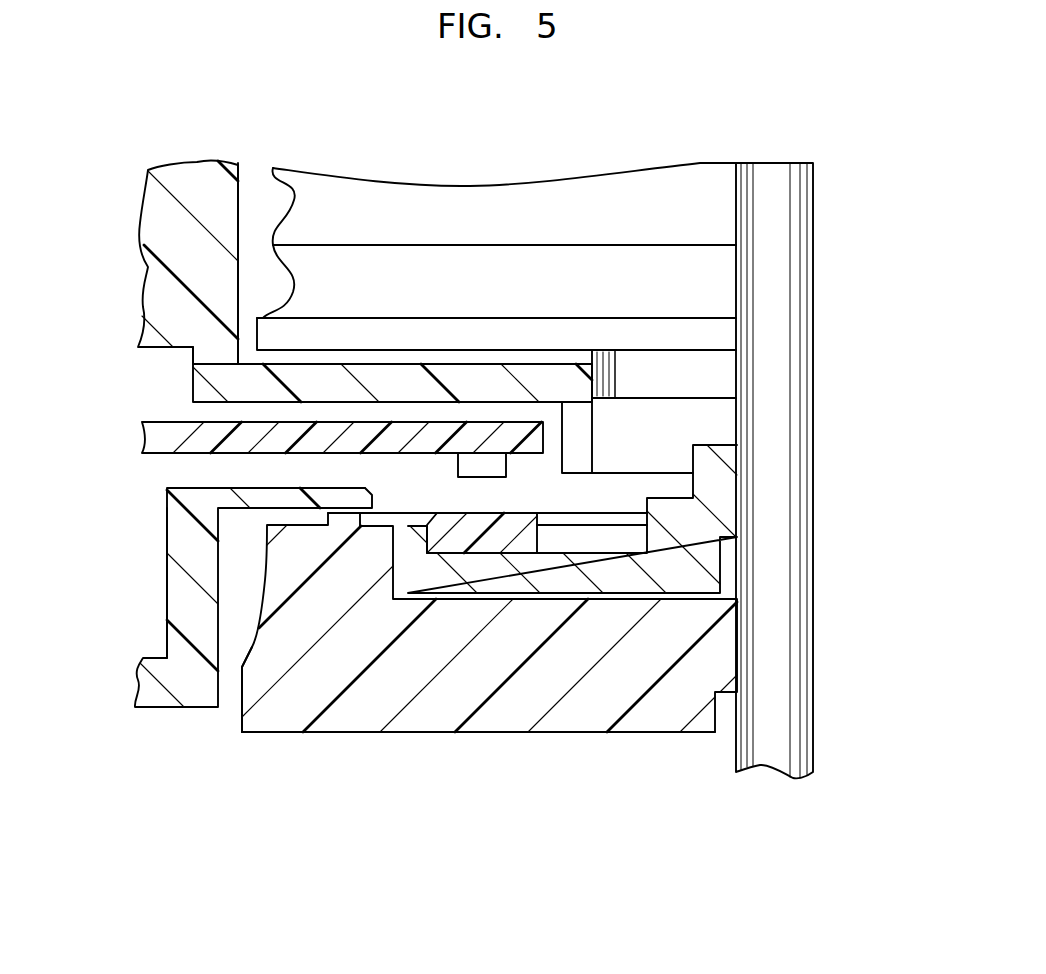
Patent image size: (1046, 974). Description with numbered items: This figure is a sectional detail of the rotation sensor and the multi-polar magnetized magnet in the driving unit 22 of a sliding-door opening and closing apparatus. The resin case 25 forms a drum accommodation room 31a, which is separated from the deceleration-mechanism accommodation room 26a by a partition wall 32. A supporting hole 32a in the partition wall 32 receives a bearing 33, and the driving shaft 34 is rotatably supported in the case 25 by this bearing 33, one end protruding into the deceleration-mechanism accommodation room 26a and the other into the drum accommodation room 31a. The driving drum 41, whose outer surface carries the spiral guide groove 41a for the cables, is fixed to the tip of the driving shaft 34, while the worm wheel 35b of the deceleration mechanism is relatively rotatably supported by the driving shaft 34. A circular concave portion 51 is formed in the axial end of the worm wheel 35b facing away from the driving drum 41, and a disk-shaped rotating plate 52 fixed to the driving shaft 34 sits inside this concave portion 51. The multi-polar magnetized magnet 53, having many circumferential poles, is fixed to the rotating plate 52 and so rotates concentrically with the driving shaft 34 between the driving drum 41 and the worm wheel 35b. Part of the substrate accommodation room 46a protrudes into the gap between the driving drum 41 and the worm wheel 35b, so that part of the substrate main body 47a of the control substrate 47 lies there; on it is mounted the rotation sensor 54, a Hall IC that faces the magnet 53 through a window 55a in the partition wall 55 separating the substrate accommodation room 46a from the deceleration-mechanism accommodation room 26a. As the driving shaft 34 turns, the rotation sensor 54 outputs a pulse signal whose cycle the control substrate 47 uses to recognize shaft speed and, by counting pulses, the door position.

The driving unit 22 is at (813, 78).
The case 25 is at (191, 150).
The drum accommodation room 31a is at (262, 212).
The partition wall 32 is at (340, 382).
The supporting hole 32a is at (722, 435).
The bearing 33 is at (678, 373).
The driving shaft 34 is at (774, 750).
The worm wheel 35b is at (519, 706).
The driving drum 41 is at (626, 156).
The guide groove 41a is at (506, 200).
The substrate accommodation room 46a is at (152, 623).
The control substrate 47 is at (150, 473).
The substrate main body 47a is at (160, 438).
The concave portion 51 is at (398, 569).
The rotating plate 52 is at (610, 573).
The multi-polar magnetized magnet 53 is at (483, 540).
The rotation sensor 54 is at (480, 465).
The partition wall 55 is at (302, 492).
The window 55a is at (410, 482).
The deceleration-mechanism accommodation room 26a is at (233, 612).